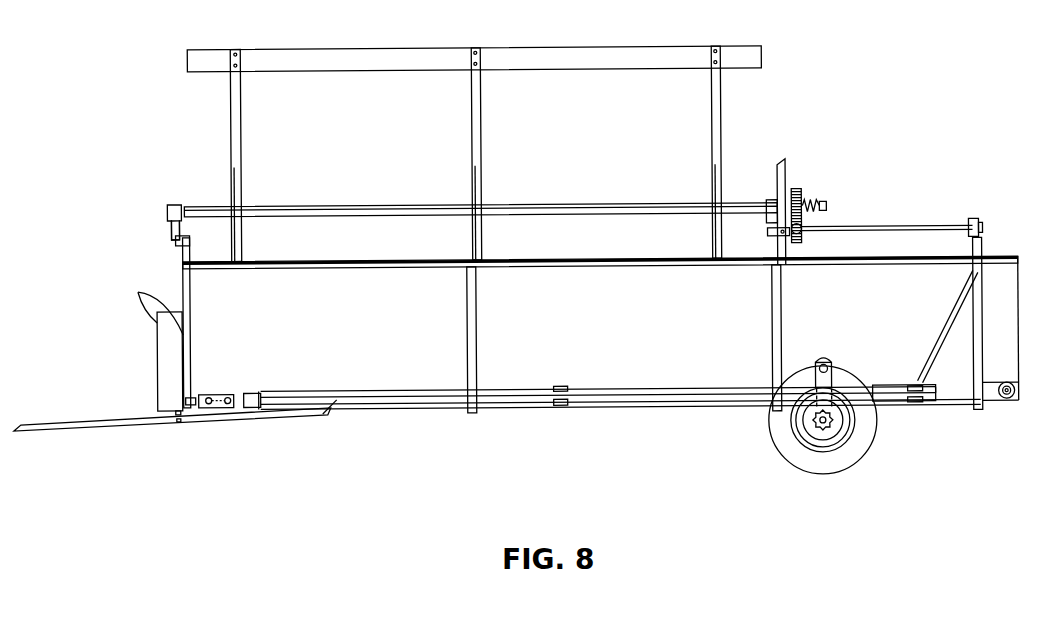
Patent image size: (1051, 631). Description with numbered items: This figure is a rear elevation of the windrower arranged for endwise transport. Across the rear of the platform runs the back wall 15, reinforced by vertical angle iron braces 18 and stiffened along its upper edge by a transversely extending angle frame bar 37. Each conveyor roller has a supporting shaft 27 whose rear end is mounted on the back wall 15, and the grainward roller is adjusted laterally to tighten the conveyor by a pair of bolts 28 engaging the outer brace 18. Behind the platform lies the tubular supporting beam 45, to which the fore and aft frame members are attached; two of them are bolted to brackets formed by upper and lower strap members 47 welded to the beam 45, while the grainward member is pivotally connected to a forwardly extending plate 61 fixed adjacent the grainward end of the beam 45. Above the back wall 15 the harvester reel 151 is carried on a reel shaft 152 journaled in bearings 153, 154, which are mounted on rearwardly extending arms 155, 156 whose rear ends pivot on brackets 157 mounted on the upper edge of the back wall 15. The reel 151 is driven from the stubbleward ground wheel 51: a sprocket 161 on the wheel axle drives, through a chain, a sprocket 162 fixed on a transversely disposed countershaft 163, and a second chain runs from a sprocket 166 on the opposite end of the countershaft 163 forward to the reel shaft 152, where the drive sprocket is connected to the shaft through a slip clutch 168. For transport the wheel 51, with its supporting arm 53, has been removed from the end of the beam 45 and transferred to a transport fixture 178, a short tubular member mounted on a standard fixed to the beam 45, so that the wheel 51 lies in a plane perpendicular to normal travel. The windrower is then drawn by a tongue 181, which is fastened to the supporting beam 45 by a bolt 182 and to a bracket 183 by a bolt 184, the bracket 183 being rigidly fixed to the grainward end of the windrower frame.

The back wall 15 is at (625, 331).
The angle iron braces 18 is at (191, 300).
The supporting shaft 27 is at (228, 396).
The bolts 28 is at (190, 396).
The angle frame bar 37 is at (349, 259).
The tubular supporting beam 45 is at (649, 402).
The strap members 47 is at (558, 386).
The ground engaging wheel 51 is at (863, 444).
The supporting arm 53 is at (836, 384).
The forwardly extending plate 61 is at (259, 390).
The harvester reel 151 is at (568, 46).
The reel shaft 152 is at (617, 210).
The bearing 153 is at (177, 202).
The bearing 154 is at (777, 200).
The reel supporting arm 155 is at (168, 232).
The reel supporting arm 156 is at (768, 234).
The brackets 157 is at (187, 240).
The sprocket 161 is at (819, 432).
The sprocket 162 is at (977, 221).
The countershaft 163 is at (898, 227).
The sprocket 166 is at (806, 229).
The slip clutch 168 is at (806, 196).
The transport fixture 178 is at (818, 362).
The tongue 181 is at (110, 422).
The bolt 182 is at (328, 388).
The bracket 183 is at (182, 399).
The bolt 184 is at (178, 415).